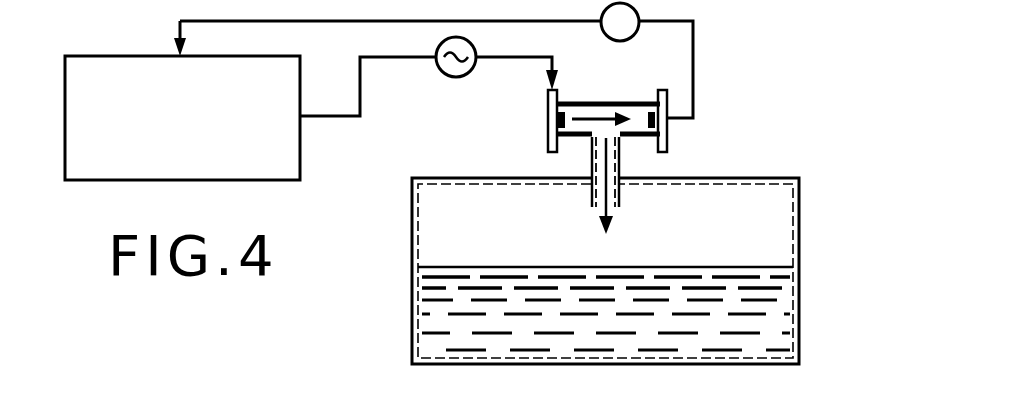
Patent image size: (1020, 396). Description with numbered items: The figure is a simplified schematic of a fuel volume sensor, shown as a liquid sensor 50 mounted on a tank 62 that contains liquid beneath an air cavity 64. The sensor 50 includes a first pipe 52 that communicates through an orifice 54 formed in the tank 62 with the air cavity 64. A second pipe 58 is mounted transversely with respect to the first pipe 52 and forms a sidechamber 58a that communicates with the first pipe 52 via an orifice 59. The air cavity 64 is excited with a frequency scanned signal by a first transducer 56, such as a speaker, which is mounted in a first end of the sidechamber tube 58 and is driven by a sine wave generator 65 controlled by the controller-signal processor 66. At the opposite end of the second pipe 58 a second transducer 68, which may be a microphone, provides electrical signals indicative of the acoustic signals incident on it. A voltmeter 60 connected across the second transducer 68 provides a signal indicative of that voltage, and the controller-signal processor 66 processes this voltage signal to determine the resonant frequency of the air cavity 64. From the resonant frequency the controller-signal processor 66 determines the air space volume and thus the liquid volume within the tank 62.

The liquid sensor 50 is at (603, 250).
The first pipe 52 is at (622, 160).
The orifice 54 is at (621, 198).
The first transducer 56 is at (547, 140).
The second pipe 58 is at (609, 102).
The sidechamber 58a is at (578, 100).
The orifice 59 is at (592, 140).
The voltmeter 60 is at (637, 12).
The tank 62 is at (411, 195).
The air cavity 64 is at (508, 236).
The sine wave generator 65 is at (448, 76).
The controller-signal processor 66 is at (78, 182).
The second transducer 68 is at (663, 90).